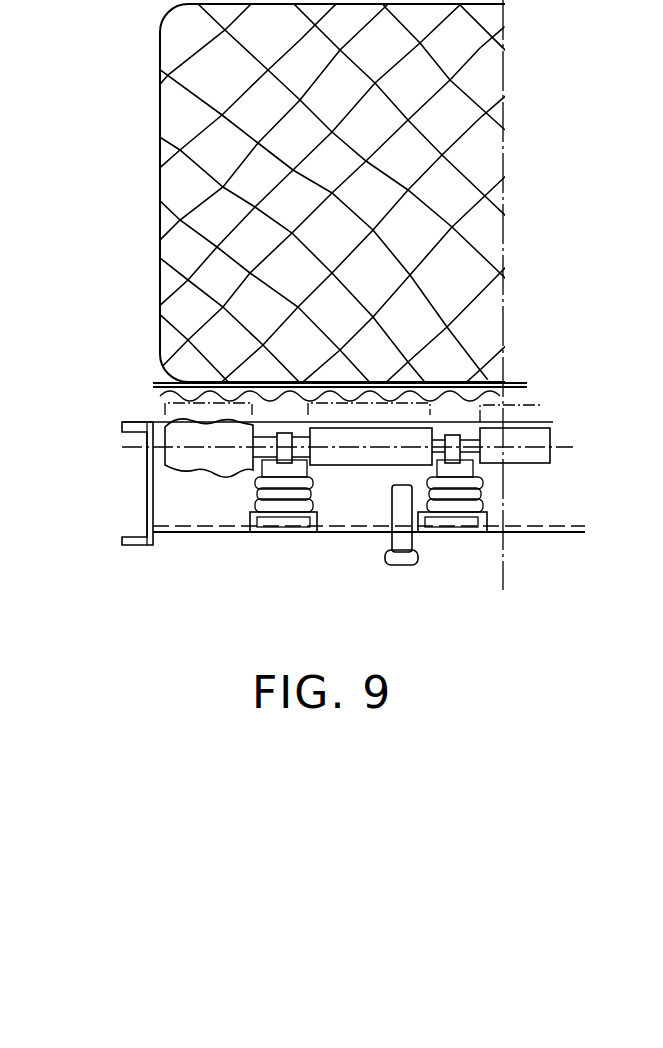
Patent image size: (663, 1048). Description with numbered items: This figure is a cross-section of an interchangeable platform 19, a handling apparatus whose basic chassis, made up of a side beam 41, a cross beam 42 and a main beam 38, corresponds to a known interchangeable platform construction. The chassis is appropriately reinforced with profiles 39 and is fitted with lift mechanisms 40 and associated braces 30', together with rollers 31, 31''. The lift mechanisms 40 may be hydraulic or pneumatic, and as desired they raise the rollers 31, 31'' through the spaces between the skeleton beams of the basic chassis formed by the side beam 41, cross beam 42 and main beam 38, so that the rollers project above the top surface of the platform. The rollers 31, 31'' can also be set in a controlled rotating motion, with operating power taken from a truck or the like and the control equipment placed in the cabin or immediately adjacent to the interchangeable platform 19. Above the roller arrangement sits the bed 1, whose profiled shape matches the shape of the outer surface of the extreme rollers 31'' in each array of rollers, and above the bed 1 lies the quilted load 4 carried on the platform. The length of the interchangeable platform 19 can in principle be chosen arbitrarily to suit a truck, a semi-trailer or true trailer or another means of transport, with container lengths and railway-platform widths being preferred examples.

The quilted cushion 4 is at (480, 160).
The bed 1 is at (503, 382).
The cross beam 42 is at (227, 508).
The side beam 41 is at (137, 547).
The interchangeable platform 19 is at (140, 480).
The extreme roller 31'' is at (209, 463).
The roller 31 is at (401, 462).
The brace 30' is at (404, 408).
The lift mechanism 40 is at (306, 501).
The profile 39 is at (260, 525).
The main beam 38 is at (398, 565).